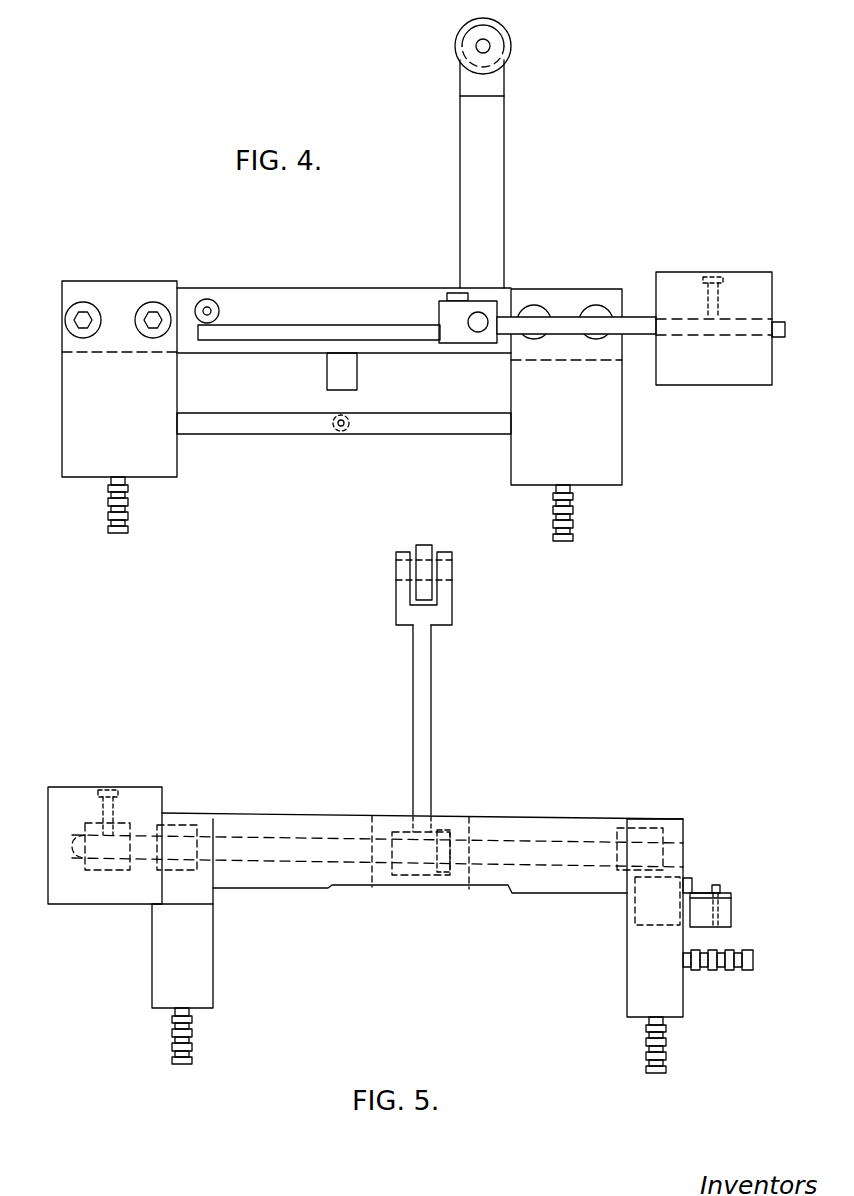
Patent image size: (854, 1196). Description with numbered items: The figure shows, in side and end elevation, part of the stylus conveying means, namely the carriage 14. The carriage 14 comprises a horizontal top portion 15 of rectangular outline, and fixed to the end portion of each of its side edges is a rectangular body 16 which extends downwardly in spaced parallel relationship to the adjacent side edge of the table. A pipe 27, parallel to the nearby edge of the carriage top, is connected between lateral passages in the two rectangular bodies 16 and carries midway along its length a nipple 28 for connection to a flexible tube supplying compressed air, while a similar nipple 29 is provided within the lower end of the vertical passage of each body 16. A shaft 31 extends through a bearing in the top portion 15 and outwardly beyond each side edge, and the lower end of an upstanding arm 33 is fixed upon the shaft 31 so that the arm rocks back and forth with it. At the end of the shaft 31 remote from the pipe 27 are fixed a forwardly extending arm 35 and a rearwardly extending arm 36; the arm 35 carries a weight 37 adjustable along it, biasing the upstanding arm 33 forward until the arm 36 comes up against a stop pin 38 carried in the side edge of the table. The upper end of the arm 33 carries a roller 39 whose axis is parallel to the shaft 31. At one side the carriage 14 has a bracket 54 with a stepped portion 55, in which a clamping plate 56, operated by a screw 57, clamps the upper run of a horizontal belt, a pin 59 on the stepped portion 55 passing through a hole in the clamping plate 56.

In FIG. 4, the carriage 14 is at (344, 302).
In FIG. 5, the carriage 14 is at (422, 837).
In FIG. 4, the horizontal top portion 15 is at (409, 288).
In FIG. 5, the horizontal top portion 15 is at (519, 818).
In FIG. 4, the rectangular body 16 is at (62, 446).
In FIG. 5, the rectangular body 16 is at (160, 934).
In FIG. 4, the pipe 27 is at (224, 424).
In FIG. 4, the nipple 28 is at (348, 431).
In FIG. 5, the nipple 28 is at (753, 959).
In FIG. 4, the nipple 29 is at (117, 533).
In FIG. 5, the nipple 29 is at (183, 1066).
In FIG. 4, the shaft 31 is at (483, 318).
In FIG. 5, the shaft 31 is at (58, 856).
In FIG. 4, the upstanding arm 33 is at (500, 247).
In FIG. 5, the upstanding arm 33 is at (413, 693).
In FIG. 4, the forwardly extending arm 35 is at (637, 317).
In FIG. 4, the rearwardly extending arm 36 is at (265, 341).
In FIG. 4, the weight 37 is at (772, 306).
In FIG. 5, the weight 37 is at (49, 818).
In FIG. 4, the stop pin 38 is at (216, 305).
In FIG. 4, the roller 39 is at (512, 49).
In FIG. 5, the roller 39 is at (425, 544).
In FIG. 4, the bracket 54 is at (357, 377).
In FIG. 5, the bracket 54 is at (731, 912).
In FIG. 5, the stepped portion 55 is at (733, 897).
In FIG. 5, the clamping plate 56 is at (702, 892).
In FIG. 5, the screw 57 is at (689, 877).
In FIG. 5, the pin 59 is at (719, 885).